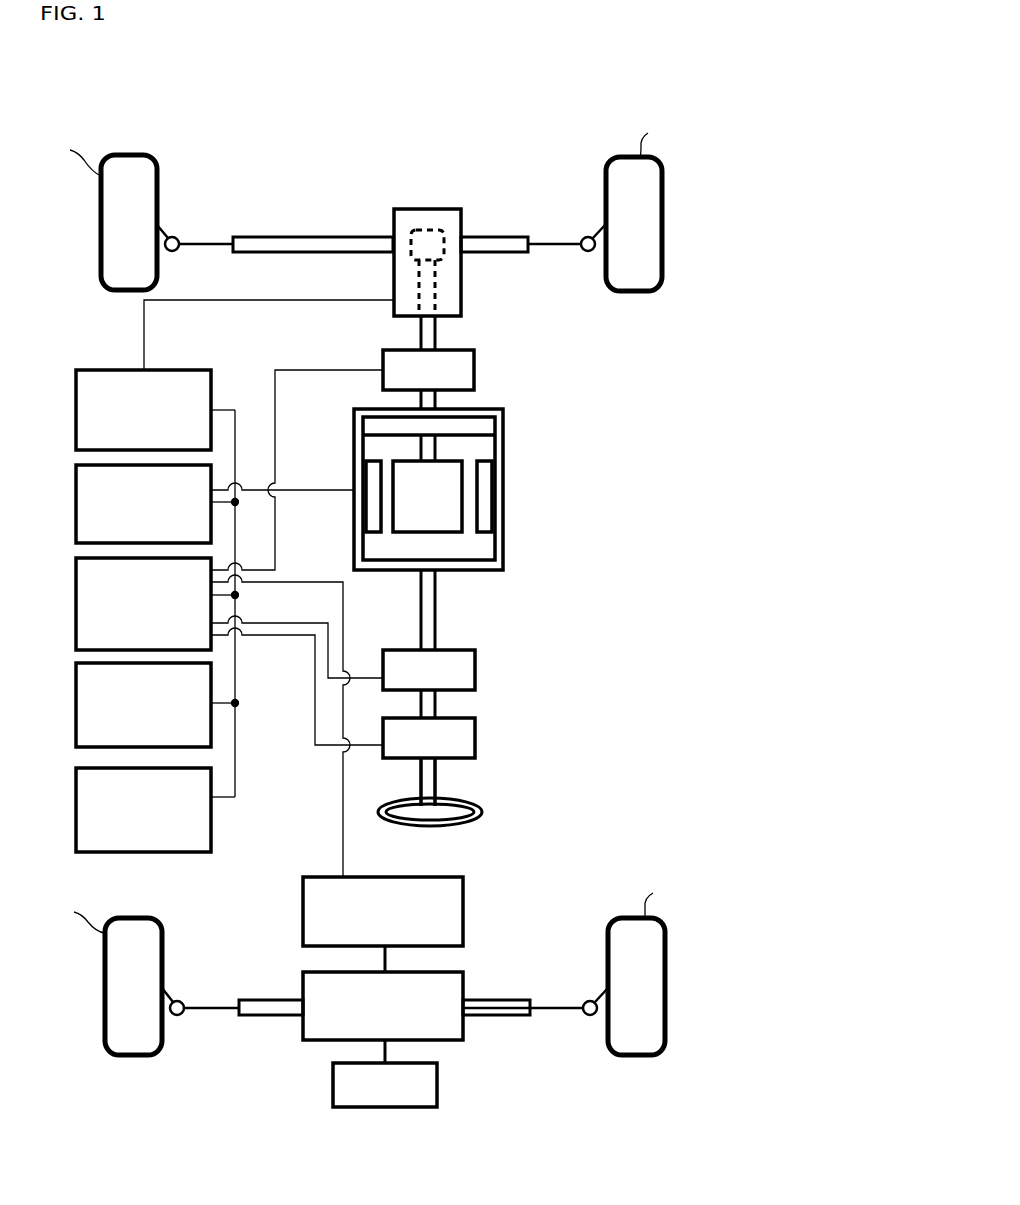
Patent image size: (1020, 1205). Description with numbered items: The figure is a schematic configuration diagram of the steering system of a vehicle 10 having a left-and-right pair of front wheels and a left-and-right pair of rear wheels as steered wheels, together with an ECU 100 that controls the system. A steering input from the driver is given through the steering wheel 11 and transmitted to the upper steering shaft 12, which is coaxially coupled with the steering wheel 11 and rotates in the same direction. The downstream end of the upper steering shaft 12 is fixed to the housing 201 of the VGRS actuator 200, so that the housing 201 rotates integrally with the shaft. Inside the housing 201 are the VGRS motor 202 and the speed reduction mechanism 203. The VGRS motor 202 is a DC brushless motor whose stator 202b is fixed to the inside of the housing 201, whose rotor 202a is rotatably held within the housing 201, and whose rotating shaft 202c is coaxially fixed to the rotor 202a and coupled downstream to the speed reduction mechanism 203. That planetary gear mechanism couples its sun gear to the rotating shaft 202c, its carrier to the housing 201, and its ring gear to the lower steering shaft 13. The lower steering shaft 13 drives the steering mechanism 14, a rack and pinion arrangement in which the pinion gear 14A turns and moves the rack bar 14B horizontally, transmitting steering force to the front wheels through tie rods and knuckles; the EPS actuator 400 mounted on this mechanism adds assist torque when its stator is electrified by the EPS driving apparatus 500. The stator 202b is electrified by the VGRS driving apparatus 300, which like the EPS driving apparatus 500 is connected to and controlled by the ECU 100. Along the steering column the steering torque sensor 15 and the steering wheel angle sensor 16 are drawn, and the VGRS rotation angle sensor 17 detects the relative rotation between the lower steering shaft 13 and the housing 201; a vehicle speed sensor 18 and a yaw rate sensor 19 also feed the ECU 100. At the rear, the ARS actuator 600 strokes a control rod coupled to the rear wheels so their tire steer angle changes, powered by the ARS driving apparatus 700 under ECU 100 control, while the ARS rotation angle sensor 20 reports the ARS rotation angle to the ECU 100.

The vehicle 10 is at (764, 87).
The steering wheel 11 is at (480, 815).
The upper steering shaft 12 is at (430, 783).
The lower steering shaft 13 is at (428, 333).
The steering mechanism 14 is at (323, 215).
The pinion gear 14A is at (432, 235).
The rack bar 14B is at (355, 242).
The steering torque sensor 15 is at (475, 740).
The steering wheel angle sensor 16 is at (475, 680).
The VGRS rotation angle sensor 17 is at (383, 362).
The vehicle speed sensor 18 is at (76, 663).
The yaw rate sensor 19 is at (76, 768).
The ARS rotation angle sensor 20 is at (333, 1066).
The ECU 100 is at (76, 558).
The VGRS actuator 200 is at (512, 593).
The housing 201 is at (503, 543).
The VGRS motor 202 is at (538, 520).
The rotor 202a is at (436, 479).
The stator 202b is at (484, 498).
The rotating shaft 202c is at (427, 447).
The speed reduction mechanism 203 is at (484, 427).
The VGRS driving apparatus 300 is at (76, 466).
The EPS actuator 400 is at (461, 297).
The EPS driving apparatus 500 is at (76, 372).
The ARS actuator 600 is at (463, 973).
The ARS driving apparatus 700 is at (463, 878).